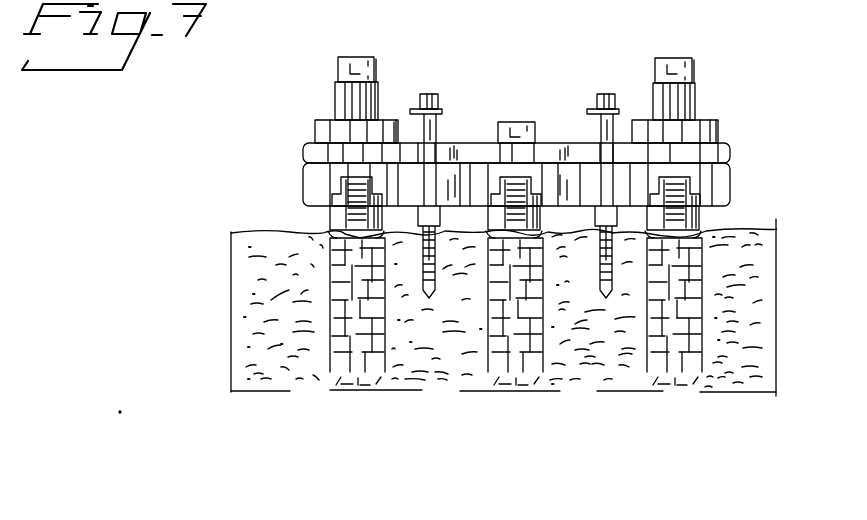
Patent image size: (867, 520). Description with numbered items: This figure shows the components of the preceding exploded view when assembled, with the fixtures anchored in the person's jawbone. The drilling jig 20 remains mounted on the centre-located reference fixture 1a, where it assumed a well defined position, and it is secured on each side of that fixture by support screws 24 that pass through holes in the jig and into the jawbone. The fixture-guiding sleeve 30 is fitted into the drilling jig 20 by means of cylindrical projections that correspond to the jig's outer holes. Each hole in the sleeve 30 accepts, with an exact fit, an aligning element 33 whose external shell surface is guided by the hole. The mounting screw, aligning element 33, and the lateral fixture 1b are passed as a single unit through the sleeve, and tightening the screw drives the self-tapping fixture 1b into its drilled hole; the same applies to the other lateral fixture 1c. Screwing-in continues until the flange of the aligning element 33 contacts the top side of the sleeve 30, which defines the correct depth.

The reference fixture 1a is at (480, 362).
The fixture 1b is at (320, 352).
The fixture 1c is at (640, 363).
The drilling jig 20 is at (310, 183).
The support screw 24 is at (430, 137).
The fixture-guiding sleeve 30 is at (308, 152).
The aligning element 33 is at (323, 128).